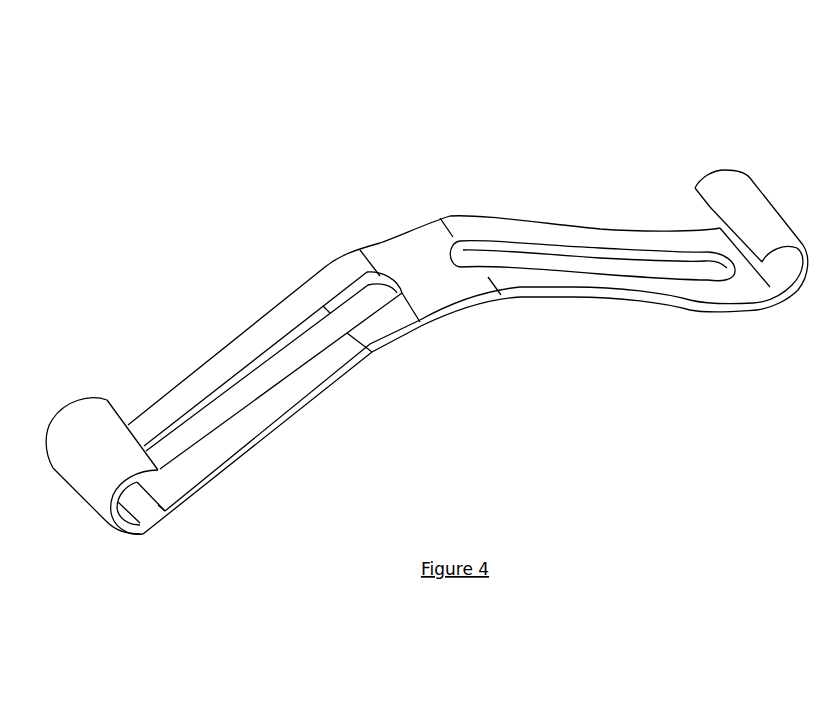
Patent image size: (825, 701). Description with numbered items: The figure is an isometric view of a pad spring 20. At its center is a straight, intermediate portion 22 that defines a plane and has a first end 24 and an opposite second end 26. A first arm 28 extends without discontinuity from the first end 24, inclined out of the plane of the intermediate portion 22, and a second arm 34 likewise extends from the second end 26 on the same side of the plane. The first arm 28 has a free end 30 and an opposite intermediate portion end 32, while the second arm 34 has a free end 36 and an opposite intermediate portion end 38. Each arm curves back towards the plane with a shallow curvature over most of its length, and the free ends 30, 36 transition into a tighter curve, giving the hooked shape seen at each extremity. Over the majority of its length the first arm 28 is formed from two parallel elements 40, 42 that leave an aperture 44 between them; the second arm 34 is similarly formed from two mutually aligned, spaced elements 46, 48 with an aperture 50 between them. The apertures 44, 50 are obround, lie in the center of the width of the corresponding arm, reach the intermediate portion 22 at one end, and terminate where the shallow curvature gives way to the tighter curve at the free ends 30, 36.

The pad spring 20 is at (420, 202).
The straight, intermediate portion 22 is at (416, 248).
The first end 24 is at (420, 327).
The second end 26 is at (497, 291).
The first arm 28 is at (262, 416).
The free end 30 is at (108, 400).
The intermediate portion end 32 is at (318, 297).
The second arm 34 is at (637, 287).
The free end 36 is at (710, 208).
The intermediate portion end 38 is at (497, 222).
The parallel element 40 is at (200, 392).
The parallel element 42 is at (201, 467).
The aperture 44 is at (307, 342).
The spaced element 46 is at (572, 228).
The spaced element 48 is at (580, 288).
The aperture 50 is at (688, 270).